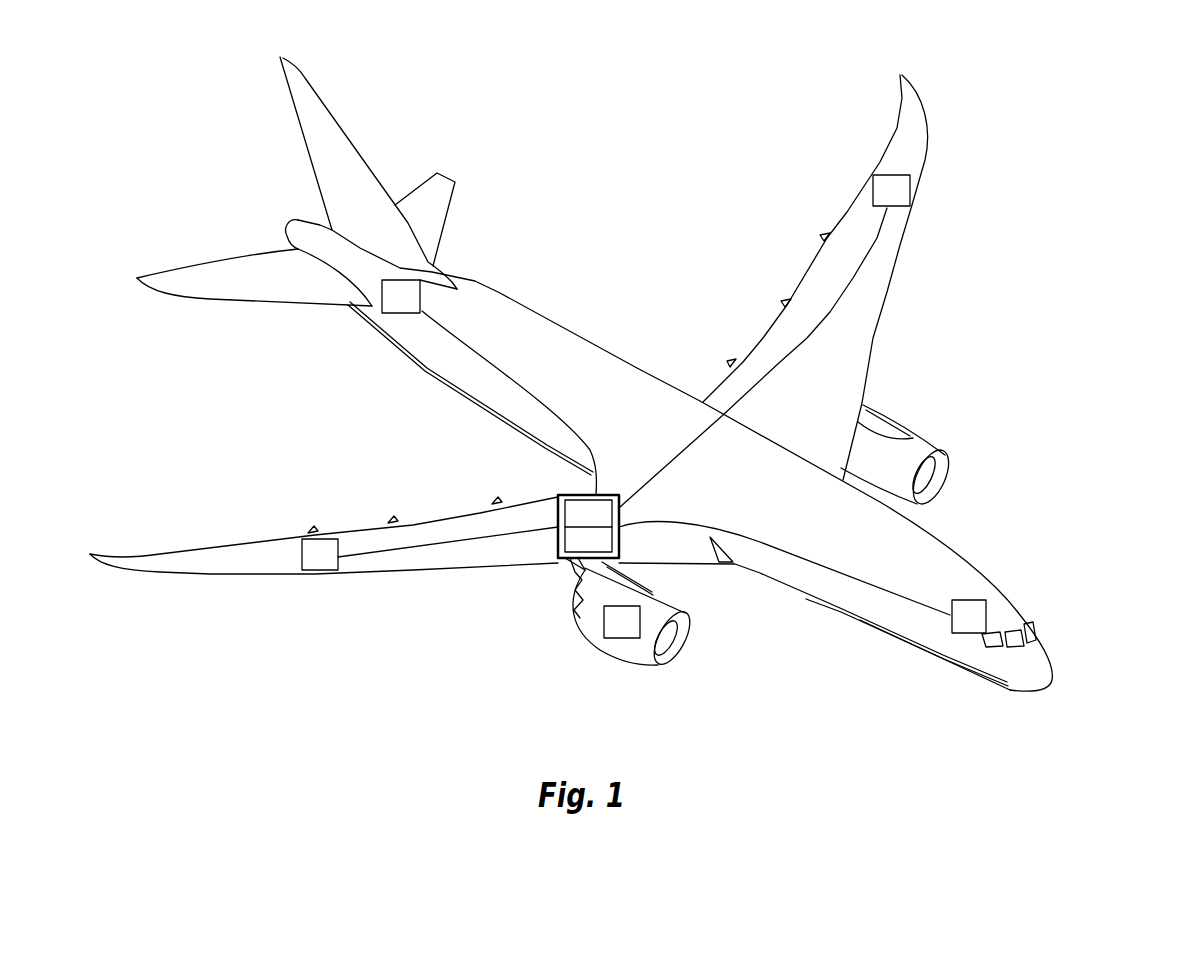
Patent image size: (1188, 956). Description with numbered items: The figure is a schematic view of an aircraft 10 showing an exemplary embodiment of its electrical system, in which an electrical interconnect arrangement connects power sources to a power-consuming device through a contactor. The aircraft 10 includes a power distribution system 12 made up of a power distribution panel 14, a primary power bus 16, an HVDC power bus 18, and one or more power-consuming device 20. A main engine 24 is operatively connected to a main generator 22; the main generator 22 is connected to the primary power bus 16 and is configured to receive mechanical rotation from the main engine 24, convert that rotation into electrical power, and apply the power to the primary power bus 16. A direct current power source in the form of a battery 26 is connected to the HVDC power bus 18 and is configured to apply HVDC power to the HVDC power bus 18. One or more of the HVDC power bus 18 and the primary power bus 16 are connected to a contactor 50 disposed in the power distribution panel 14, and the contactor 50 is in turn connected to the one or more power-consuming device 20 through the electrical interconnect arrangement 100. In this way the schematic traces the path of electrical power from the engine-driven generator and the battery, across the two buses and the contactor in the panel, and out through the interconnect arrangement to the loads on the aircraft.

The aircraft 10 is at (1017, 228).
The power distribution system 12 is at (460, 576).
The power distribution panel 14 is at (558, 510).
The primary power bus 16 is at (812, 337).
The HVDC power bus 18 is at (543, 392).
The power-consuming device 20 is at (880, 188).
The main generator 22 is at (615, 640).
The main engine 24 is at (677, 657).
The battery 26 is at (388, 308).
The contactor 50 is at (598, 512).
The electrical interconnect arrangement 100 is at (573, 543).